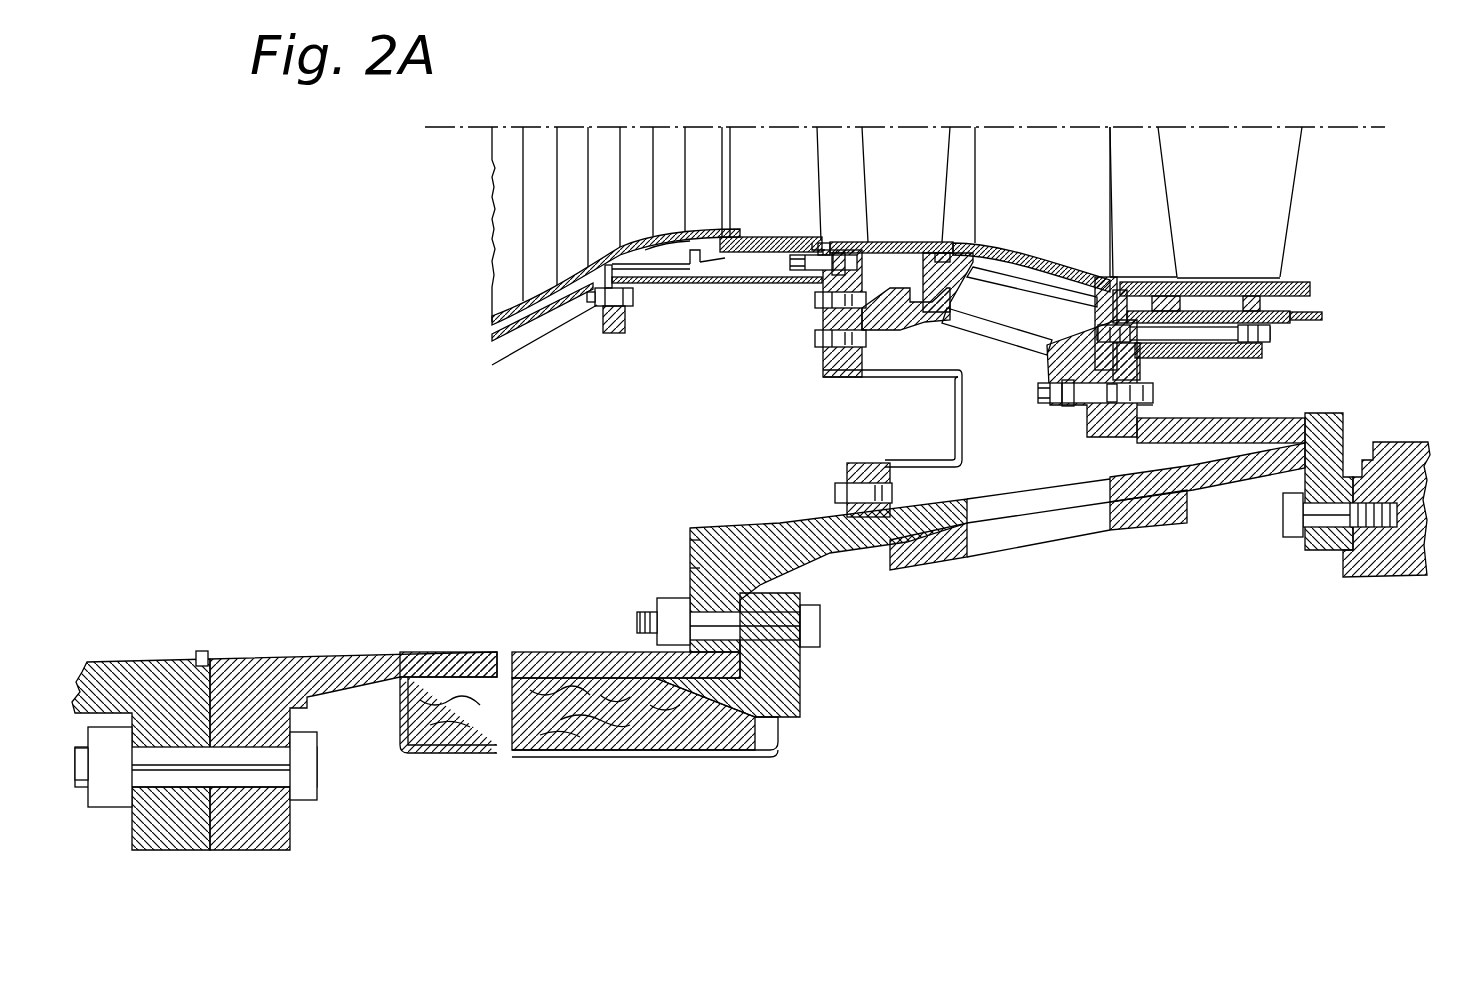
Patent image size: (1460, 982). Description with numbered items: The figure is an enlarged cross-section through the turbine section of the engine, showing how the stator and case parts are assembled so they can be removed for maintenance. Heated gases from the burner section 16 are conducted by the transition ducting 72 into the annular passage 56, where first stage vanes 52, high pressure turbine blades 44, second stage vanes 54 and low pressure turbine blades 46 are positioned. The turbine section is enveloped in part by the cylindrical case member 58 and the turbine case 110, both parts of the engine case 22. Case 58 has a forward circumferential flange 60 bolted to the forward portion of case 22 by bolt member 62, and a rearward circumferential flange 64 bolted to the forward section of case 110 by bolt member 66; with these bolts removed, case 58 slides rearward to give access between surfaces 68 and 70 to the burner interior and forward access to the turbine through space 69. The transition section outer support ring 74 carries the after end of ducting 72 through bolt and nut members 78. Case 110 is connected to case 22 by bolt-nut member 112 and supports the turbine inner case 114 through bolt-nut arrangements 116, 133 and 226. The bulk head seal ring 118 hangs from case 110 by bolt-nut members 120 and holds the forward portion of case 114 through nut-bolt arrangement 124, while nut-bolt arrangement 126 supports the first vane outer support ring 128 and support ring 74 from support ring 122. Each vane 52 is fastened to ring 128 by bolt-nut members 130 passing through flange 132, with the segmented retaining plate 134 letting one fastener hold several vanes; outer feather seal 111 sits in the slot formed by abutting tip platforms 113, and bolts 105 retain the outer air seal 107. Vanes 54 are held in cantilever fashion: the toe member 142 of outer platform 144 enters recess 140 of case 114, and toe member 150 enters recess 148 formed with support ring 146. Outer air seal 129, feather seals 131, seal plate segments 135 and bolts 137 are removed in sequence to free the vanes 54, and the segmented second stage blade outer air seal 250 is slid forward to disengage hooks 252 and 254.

The burner section 16 is at (568, 410).
The engine case 22 is at (1143, 528).
The turbine blades 44 is at (906, 183).
The turbine blades 46 is at (1231, 177).
The first stage vanes 52 is at (774, 180).
The second stage vanes 54 is at (1061, 183).
The annular passage 56 is at (1141, 210).
The cylindrical case member 58 is at (470, 618).
The forward circumferential flange 60 is at (268, 823).
The bolt member 62 is at (306, 767).
The rearward circumferential flange 64 is at (805, 680).
The bolt member 66 is at (812, 627).
The surface 68 is at (233, 647).
The space 69 is at (222, 690).
The surface 70 is at (690, 540).
The transition ducting 72 is at (540, 253).
The transition section outer support ring 74 is at (612, 335).
The bolt and nut members 78 is at (592, 305).
The bolts 105 is at (705, 282).
The outer air seal 107 is at (695, 262).
The turbine case 110 is at (723, 543).
The outer feather seal 111 is at (735, 253).
The bolt-nut member 112 is at (1295, 515).
The tip platform 113 is at (752, 237).
The turbine inner case 114 is at (998, 340).
The bolt-nut arrangement 116 is at (1150, 395).
The bulk head seal ring 118 is at (955, 432).
The bolt-nut members 120 is at (835, 490).
The support ring 122 is at (847, 378).
The nut-bolt arrangement 124 is at (815, 345).
The nut-bolt arrangement 126 is at (820, 300).
The first vane outer support ring 128 is at (828, 255).
The outer air seal 129 is at (897, 243).
The bolt-nut members 130 is at (792, 262).
The outer vane feather seals 131 is at (985, 245).
The radially outwardly extending flange 132 is at (824, 243).
The nuts 133 is at (1050, 395).
The segmented retaining plate 134 is at (818, 243).
The seal plate segments 135 is at (1068, 404).
The bolts 137 is at (1098, 332).
The circumferential recess 140 is at (883, 322).
The toe member 142 is at (945, 300).
The outer platform 144 is at (1040, 292).
The support ring 146 is at (1210, 357).
The circumferential recess 148 is at (1135, 343).
The toe member 150 is at (1138, 370).
The bolt-nut arrangement 226 is at (1155, 405).
The second stage blade outer air seal 250 is at (1300, 283).
The hook 252 is at (1172, 295).
The hook 254 is at (1258, 295).